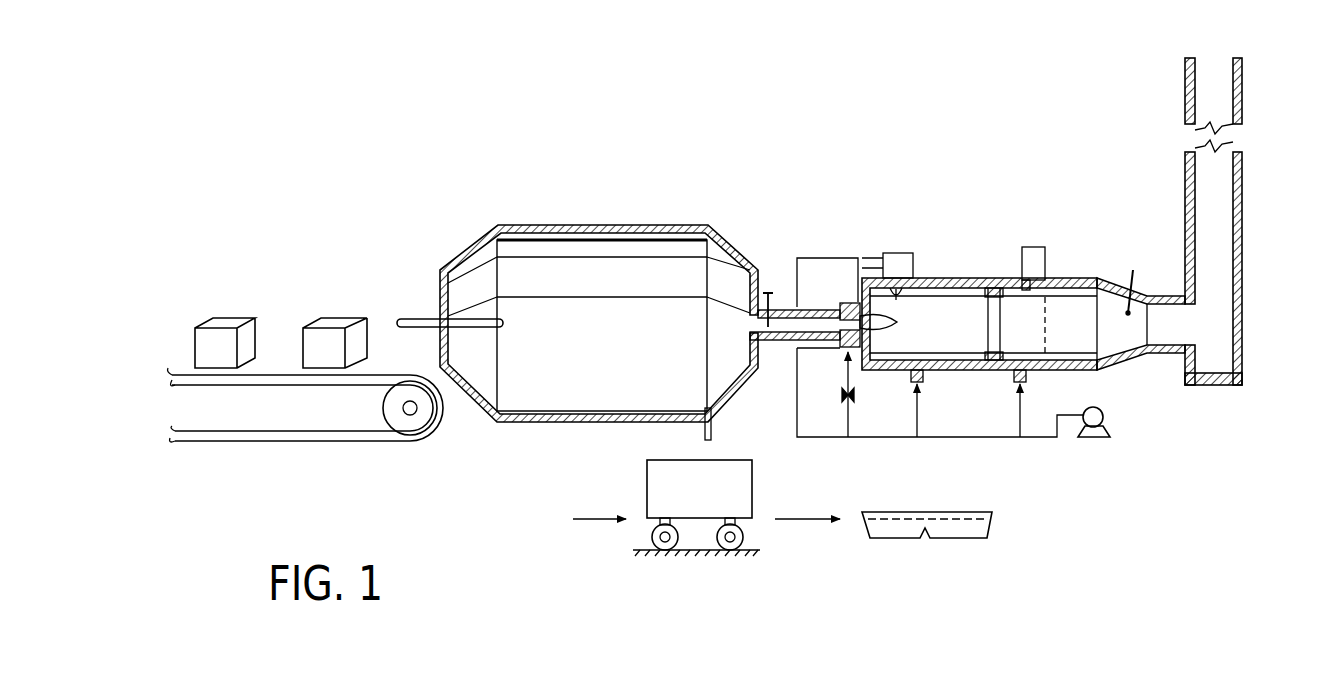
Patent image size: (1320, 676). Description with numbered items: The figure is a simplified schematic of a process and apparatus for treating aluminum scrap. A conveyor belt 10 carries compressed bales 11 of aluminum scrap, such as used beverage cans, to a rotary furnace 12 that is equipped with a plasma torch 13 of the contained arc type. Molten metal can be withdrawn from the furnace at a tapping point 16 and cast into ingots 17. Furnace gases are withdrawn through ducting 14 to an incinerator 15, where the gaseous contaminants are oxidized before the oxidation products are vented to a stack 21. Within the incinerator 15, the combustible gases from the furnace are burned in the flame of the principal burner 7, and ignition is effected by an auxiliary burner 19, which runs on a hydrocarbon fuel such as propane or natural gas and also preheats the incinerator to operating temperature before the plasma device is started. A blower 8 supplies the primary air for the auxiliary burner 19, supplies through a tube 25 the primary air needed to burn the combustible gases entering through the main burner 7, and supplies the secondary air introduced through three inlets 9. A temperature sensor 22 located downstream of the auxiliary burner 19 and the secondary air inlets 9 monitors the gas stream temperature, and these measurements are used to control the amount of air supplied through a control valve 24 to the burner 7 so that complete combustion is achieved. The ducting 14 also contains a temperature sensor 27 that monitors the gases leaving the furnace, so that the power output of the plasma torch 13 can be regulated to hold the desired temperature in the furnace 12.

The principal burner 7 is at (850, 300).
The blower 8 is at (1105, 416).
The secondary air inlets 9 is at (1021, 262).
The conveyor belt 10 is at (340, 440).
The compressed bales 11 is at (325, 322).
The rotary furnace 12 is at (618, 225).
The plasma torch 13 is at (485, 332).
The ducting 14 is at (794, 344).
The incinerator 15 is at (958, 278).
The tapping point 16 is at (700, 427).
The ingots 17 is at (946, 510).
The auxiliary burner 19 is at (893, 252).
The stack 21 is at (1243, 223).
The temperature sensor 22 is at (1132, 290).
The control valve 24 is at (855, 402).
The tube 25 is at (843, 382).
The temperature sensor 27 is at (768, 292).